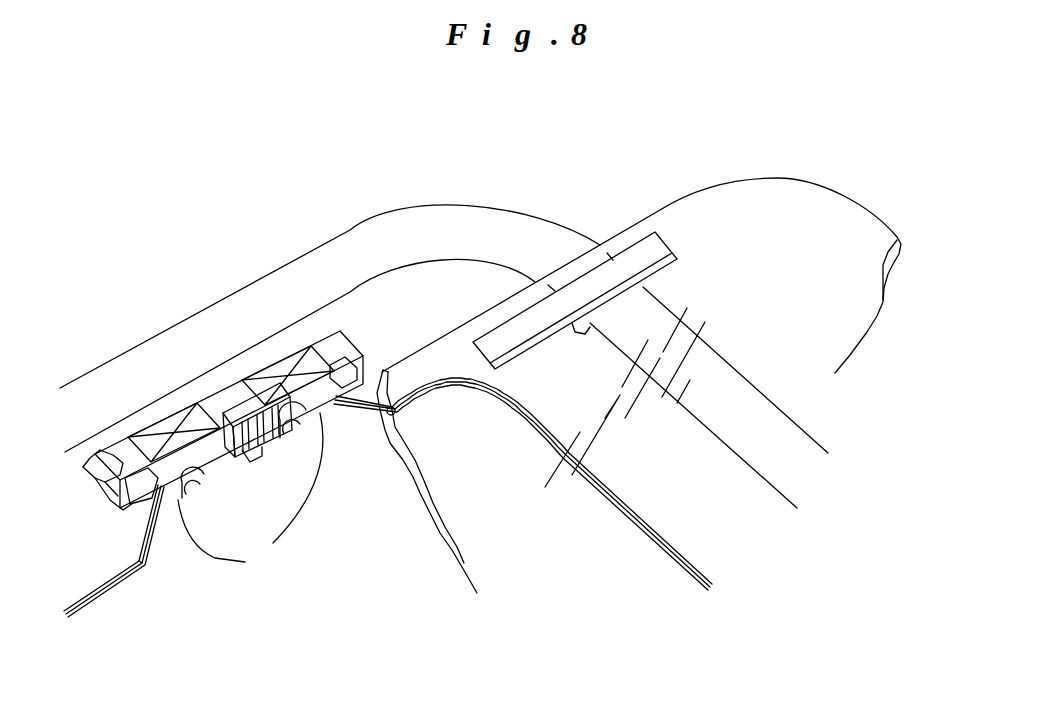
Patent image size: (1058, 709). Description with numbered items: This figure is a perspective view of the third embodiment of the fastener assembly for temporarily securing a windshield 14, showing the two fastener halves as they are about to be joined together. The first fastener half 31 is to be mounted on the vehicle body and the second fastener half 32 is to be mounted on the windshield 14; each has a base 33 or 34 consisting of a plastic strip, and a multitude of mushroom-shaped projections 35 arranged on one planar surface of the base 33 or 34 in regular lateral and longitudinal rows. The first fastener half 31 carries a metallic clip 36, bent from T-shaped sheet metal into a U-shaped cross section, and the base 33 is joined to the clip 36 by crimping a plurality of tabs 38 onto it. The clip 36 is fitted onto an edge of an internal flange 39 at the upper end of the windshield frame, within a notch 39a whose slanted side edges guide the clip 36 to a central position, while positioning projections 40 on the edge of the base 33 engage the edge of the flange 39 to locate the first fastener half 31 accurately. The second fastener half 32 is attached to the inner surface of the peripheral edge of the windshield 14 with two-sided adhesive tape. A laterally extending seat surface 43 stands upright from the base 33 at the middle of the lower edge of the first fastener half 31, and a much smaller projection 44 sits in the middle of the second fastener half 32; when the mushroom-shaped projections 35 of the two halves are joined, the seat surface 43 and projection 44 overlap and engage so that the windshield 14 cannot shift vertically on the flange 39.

The windshield 14 is at (740, 185).
The first fastener half 31 is at (212, 400).
The second fastener half 32 is at (628, 238).
The base 33 is at (125, 468).
The base 34 is at (488, 362).
The mushroom-shaped projections 35 is at (292, 345).
The metallic clip 36 is at (207, 484).
The tabs 38 is at (132, 486).
The internal flange 39 is at (110, 588).
The notch 39a is at (165, 538).
The positioning projections 40 is at (250, 496).
The seat surface 43 is at (223, 395).
The projection 44 is at (590, 326).